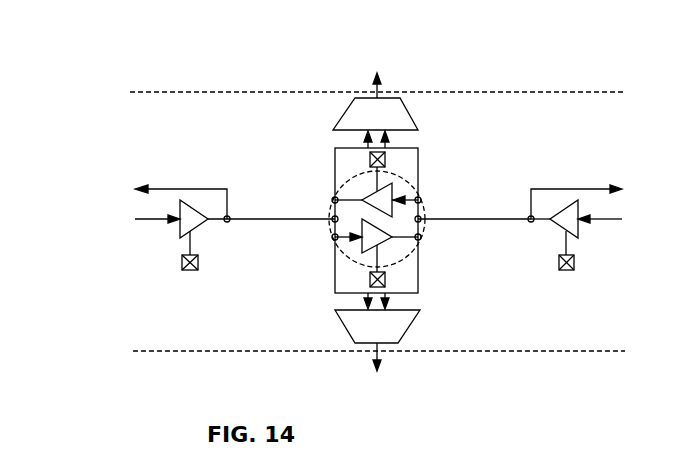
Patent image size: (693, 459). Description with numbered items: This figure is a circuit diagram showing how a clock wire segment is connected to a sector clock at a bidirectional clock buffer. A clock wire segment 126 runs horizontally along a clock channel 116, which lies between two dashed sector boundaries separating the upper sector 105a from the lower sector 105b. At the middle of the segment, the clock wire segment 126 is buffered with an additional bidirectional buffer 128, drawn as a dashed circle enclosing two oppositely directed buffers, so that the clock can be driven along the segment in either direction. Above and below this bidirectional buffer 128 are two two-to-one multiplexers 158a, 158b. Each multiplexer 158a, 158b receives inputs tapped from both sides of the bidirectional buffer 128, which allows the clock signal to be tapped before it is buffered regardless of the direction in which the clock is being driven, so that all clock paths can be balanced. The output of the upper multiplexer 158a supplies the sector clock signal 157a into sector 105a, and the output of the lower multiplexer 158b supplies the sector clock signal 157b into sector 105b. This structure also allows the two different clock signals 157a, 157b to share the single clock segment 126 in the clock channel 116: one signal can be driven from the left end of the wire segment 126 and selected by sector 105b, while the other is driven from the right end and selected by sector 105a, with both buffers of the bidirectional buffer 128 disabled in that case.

The sector 105a is at (125, 58).
The sector 105b is at (100, 363).
The clock channel 116 is at (525, 352).
The clock wire segment 126 is at (471, 289).
The bidirectional buffer 128 is at (329, 228).
The sector clock signal 157a is at (378, 43).
The sector clock signal 157b is at (355, 393).
The 2:1 multiplexer 158a is at (410, 113).
The 2:1 multiplexer 158b is at (410, 330).